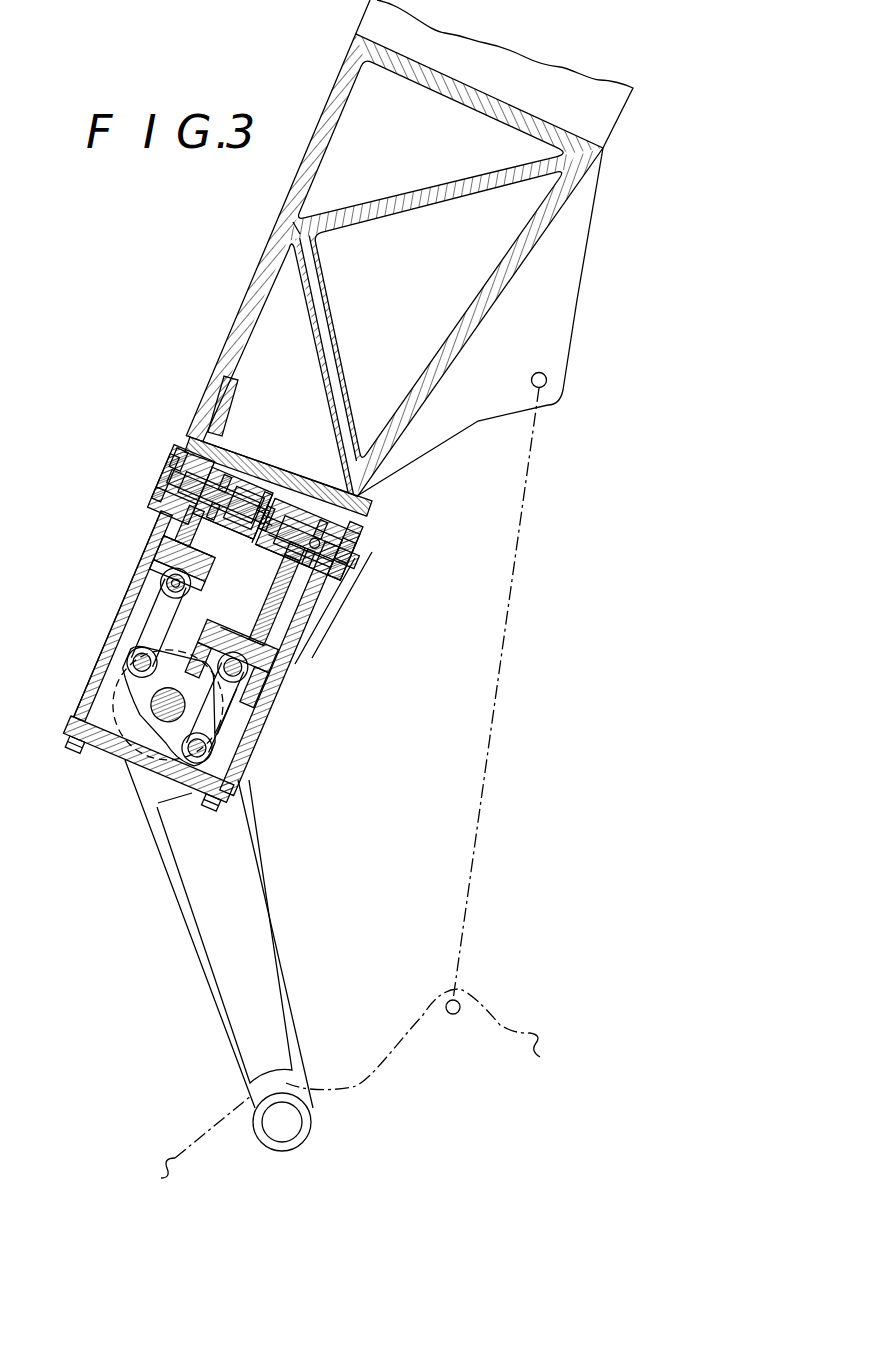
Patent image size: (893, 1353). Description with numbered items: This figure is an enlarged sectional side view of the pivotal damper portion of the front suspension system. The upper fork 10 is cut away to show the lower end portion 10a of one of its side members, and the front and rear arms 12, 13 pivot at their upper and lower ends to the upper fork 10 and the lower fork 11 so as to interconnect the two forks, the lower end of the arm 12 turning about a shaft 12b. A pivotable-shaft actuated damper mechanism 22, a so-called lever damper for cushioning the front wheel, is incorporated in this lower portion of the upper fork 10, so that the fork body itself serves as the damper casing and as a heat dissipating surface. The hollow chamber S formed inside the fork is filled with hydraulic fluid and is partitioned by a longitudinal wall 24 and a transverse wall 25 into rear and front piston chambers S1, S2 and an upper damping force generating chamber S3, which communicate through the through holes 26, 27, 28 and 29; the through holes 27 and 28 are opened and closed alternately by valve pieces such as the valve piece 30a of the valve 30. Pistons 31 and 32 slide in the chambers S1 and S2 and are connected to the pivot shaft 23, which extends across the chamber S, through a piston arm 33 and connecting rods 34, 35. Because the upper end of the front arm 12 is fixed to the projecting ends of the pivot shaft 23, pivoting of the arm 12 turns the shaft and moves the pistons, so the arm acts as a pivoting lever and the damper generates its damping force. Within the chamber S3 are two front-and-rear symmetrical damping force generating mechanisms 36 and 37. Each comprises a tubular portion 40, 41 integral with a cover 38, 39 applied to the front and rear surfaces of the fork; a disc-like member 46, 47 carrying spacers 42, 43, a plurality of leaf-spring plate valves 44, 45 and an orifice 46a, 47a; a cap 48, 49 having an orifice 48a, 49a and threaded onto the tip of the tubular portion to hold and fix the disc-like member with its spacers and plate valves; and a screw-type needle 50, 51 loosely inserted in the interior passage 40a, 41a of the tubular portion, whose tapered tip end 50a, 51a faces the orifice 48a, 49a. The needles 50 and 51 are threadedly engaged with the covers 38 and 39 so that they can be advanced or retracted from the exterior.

The upper fork 10 is at (668, 124).
The frame lower portion 10a is at (283, 208).
The lower fork 11 is at (402, 1040).
The front arm 12 is at (217, 960).
The shaft 12b is at (296, 1134).
The rear arm 13 is at (497, 700).
The pivotable-shaft actuated damper mechanism 22 is at (112, 580).
The pivot shaft 23 is at (162, 722).
The longitudinal wall 24 is at (220, 594).
The transverse wall 25 is at (318, 632).
The through hole 26 is at (317, 590).
The through hole 27 is at (200, 605).
The through hole 28 is at (152, 550).
The through hole 29 is at (160, 500).
The valve body 30 is at (90, 543).
The valve piece 30a is at (255, 560).
The piston 31 is at (257, 712).
The piston 32 is at (138, 597).
The piston arm 33 is at (75, 745).
The connecting rod 34 is at (222, 750).
The connecting rod 35 is at (110, 622).
The damping force generating mechanism 36 is at (156, 456).
The damping force generating mechanism 37 is at (352, 553).
The cover 38 is at (168, 462).
The cover 39 is at (345, 565).
The tubular portion 40 is at (230, 432).
The interior passage 40a is at (160, 488).
The tubular portion 41 is at (322, 518).
The interior passage 41a is at (338, 566).
The spacer 42 is at (197, 462).
The spacer 43 is at (356, 525).
The plate valves 44 is at (209, 445).
The plate valves 45 is at (332, 500).
The disc-like member 46 is at (245, 452).
The orifice 46a is at (160, 497).
The disc-like member 47 is at (345, 485).
The orifice 47a is at (340, 582).
The cap 48 is at (244, 466).
The orifice 48a is at (283, 480).
The cap 49 is at (225, 532).
The orifice 49a is at (323, 477).
The needle 50 is at (168, 450).
The tapered tip end 50a is at (257, 465).
The needle 51 is at (358, 552).
The tapered tip end 51a is at (355, 515).
The hollow chamber S is at (124, 644).
The rear piston chamber S1 is at (280, 640).
The front piston chamber S2 is at (156, 528).
The upper damping force generating chamber S3 is at (285, 487).